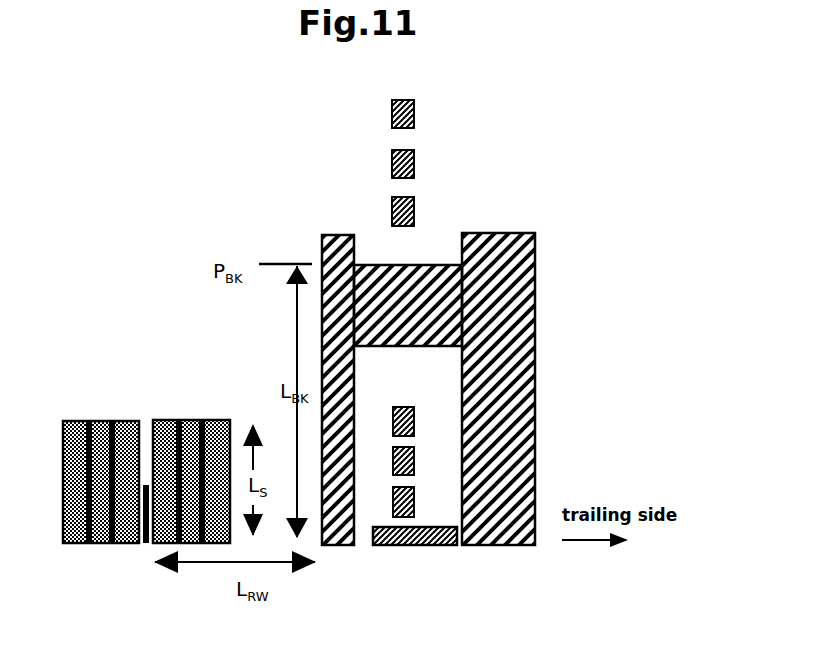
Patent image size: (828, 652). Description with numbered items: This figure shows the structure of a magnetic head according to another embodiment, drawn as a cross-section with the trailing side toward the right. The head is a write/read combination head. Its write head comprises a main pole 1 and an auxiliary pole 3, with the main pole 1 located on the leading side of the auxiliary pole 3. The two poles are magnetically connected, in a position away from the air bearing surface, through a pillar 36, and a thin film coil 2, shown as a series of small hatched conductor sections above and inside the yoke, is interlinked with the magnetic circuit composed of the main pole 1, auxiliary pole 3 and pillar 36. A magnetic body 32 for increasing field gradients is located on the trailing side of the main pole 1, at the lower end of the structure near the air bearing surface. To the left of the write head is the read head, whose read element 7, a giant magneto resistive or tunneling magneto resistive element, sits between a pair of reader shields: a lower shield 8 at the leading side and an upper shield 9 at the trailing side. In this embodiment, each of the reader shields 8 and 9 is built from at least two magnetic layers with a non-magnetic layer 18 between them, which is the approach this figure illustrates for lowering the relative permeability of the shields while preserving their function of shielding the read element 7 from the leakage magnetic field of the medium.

The main pole 1 is at (328, 236).
The thin film coil 2 is at (414, 170).
The auxiliary pole 3 is at (535, 468).
The read element 7 is at (143, 543).
The lower shield 8 is at (95, 543).
The upper shield 9 is at (213, 530).
The non-magnetic layer 18 is at (91, 419).
The magnetic body 32 is at (428, 527).
The pillar 36 is at (418, 268).